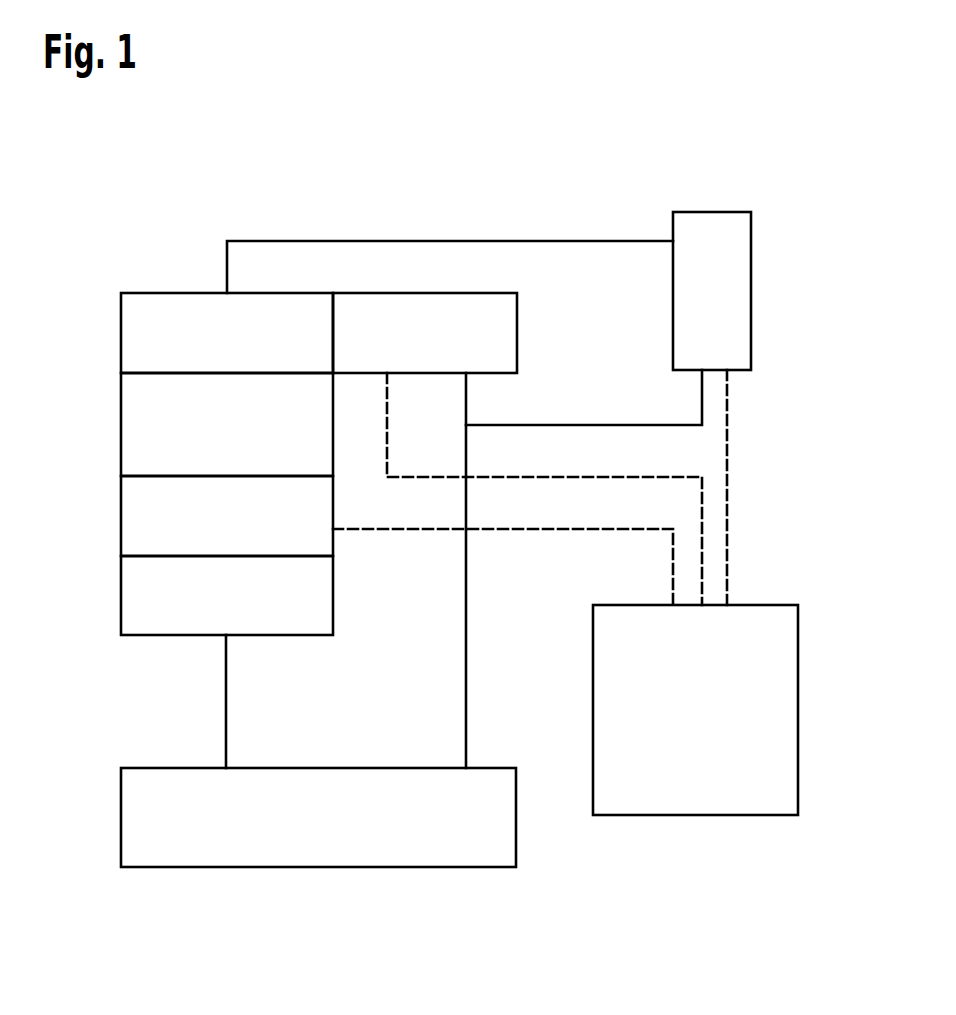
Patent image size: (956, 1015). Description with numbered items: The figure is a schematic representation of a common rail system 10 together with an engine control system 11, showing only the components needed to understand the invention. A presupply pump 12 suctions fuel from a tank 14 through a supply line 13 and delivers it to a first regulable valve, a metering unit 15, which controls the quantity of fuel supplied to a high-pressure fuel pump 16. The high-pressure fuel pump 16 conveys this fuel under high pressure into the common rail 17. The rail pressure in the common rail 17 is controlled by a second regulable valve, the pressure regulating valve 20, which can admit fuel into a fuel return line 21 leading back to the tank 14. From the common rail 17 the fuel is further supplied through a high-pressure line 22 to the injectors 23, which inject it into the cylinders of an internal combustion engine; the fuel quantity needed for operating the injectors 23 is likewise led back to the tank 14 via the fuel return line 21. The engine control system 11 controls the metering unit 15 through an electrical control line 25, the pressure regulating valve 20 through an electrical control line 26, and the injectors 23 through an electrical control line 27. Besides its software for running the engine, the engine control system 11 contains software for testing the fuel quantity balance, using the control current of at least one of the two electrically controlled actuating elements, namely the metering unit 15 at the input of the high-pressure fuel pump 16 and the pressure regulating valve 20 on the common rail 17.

The common rail system 10 is at (98, 232).
The engine control system 11 is at (693, 800).
The presupply pump 12 is at (133, 598).
The supply line 13 is at (226, 703).
The tank 14 is at (133, 818).
The metering unit 15 is at (133, 518).
The high-pressure fuel pump 16 is at (133, 427).
The common rail 17 is at (133, 332).
The pressure regulating valve 20 is at (505, 335).
The fuel return line 21 is at (466, 703).
The high-pressure line 22 is at (335, 241).
The injectors 23 is at (735, 250).
The electrical control line 25 is at (673, 560).
The electrical control line 26 is at (700, 500).
The electrical control line 27 is at (727, 425).